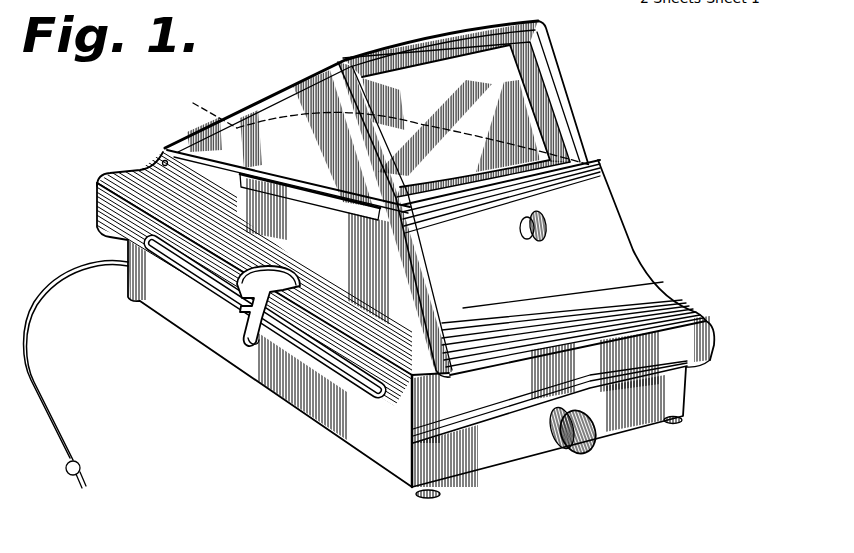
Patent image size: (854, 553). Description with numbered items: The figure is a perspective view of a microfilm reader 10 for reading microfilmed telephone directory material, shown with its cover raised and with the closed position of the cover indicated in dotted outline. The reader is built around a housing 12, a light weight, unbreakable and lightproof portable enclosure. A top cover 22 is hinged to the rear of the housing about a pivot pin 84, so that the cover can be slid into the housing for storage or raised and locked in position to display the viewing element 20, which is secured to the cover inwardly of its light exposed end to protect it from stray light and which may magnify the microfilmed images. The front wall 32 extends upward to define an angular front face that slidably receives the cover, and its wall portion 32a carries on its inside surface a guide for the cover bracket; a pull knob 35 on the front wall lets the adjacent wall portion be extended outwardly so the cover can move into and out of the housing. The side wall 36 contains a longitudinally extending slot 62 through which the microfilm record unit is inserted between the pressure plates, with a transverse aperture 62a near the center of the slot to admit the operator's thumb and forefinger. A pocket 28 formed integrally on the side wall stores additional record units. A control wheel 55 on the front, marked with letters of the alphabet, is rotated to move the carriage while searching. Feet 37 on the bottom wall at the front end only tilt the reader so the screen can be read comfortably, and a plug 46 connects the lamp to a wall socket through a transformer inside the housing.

The microfilm reader 10 is at (582, 96).
The housing 12 is at (693, 347).
The viewing element 20 is at (528, 122).
The top cover 22 is at (298, 76).
The pocket 28 is at (318, 236).
The front wall 32 is at (500, 455).
The wall portion 32a is at (607, 254).
The pull knob 35 is at (548, 229).
The side wall 36 is at (387, 453).
The feet 37 is at (431, 497).
The plug 46 is at (82, 467).
The control wheel 55 is at (605, 442).
The slot 62 is at (325, 360).
The transverse aperture 62a is at (240, 346).
The pivot pin 84 is at (160, 163).